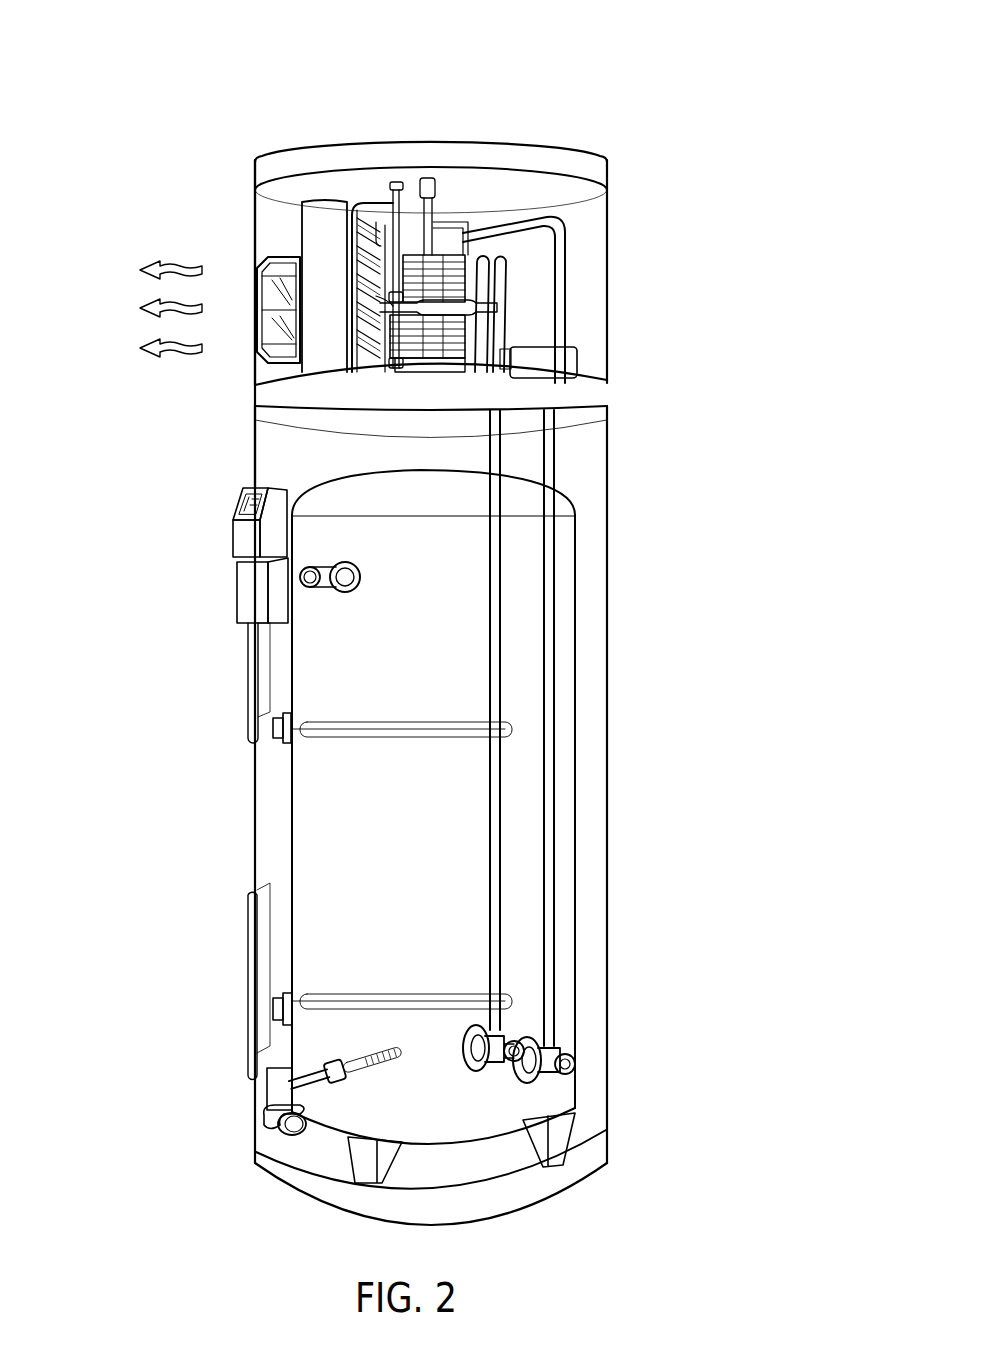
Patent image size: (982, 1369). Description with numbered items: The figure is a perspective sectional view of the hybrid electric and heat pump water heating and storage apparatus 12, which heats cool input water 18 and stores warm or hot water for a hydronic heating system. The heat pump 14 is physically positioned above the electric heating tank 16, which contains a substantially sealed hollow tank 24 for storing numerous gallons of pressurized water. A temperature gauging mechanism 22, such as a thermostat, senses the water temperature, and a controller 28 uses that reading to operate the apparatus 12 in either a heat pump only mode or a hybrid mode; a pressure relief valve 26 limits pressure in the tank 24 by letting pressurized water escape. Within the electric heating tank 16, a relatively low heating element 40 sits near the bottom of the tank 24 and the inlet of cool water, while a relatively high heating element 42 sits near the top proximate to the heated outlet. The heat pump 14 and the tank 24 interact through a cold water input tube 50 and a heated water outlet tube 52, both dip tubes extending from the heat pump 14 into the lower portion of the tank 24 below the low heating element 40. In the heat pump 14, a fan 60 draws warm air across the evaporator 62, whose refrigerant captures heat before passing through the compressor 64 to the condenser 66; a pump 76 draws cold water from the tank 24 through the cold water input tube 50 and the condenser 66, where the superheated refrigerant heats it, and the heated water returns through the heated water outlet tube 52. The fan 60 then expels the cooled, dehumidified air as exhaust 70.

The water heating and storage apparatus 12 is at (520, 107).
The heat pump 14 is at (625, 287).
The electric heating tank 16 is at (560, 905).
The cool input water 18 is at (258, 1128).
The temperature gauging mechanism 22 is at (242, 535).
The hollow tank 24 is at (411, 861).
The pressure relief valve 26 is at (300, 577).
The controller 28 is at (245, 610).
The low heating element 40 is at (462, 995).
The high heating element 42 is at (456, 735).
The cold water input tube 50 is at (500, 603).
The heated water outlet tube 52 is at (555, 677).
The fan 60 is at (262, 262).
The evaporator 62 is at (265, 395).
The compressor 64 is at (441, 266).
The condenser 66 is at (497, 277).
The exhaust 70 is at (152, 303).
The pump 76 is at (577, 368).